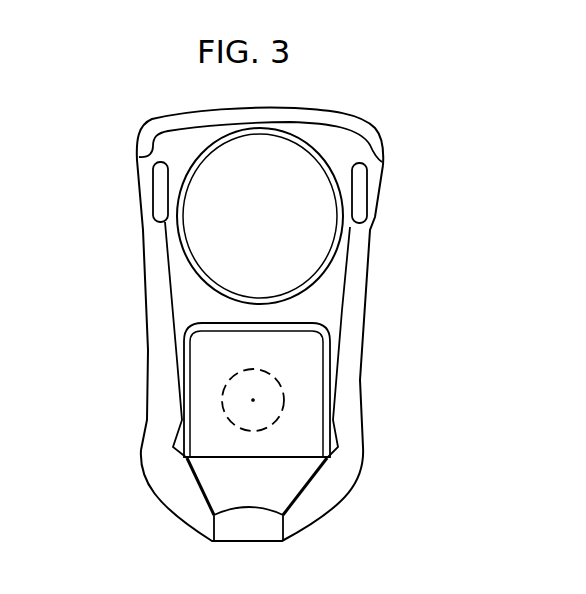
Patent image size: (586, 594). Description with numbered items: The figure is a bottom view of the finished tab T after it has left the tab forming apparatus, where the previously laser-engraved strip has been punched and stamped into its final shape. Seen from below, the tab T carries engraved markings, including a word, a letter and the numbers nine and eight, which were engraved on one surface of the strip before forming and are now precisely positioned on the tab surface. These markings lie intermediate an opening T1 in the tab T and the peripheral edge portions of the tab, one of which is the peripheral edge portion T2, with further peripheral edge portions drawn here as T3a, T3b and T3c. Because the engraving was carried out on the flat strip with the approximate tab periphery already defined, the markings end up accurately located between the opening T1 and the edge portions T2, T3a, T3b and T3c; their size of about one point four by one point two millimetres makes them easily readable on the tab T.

The tab T is at (345, 111).
The opening T1 is at (240, 293).
The peripheral edge portion T2 is at (284, 406).
The top portion of housing rim T3a is at (149, 123).
The left side portion of housing T3b is at (150, 350).
The right side portion of housing T3c is at (363, 343).